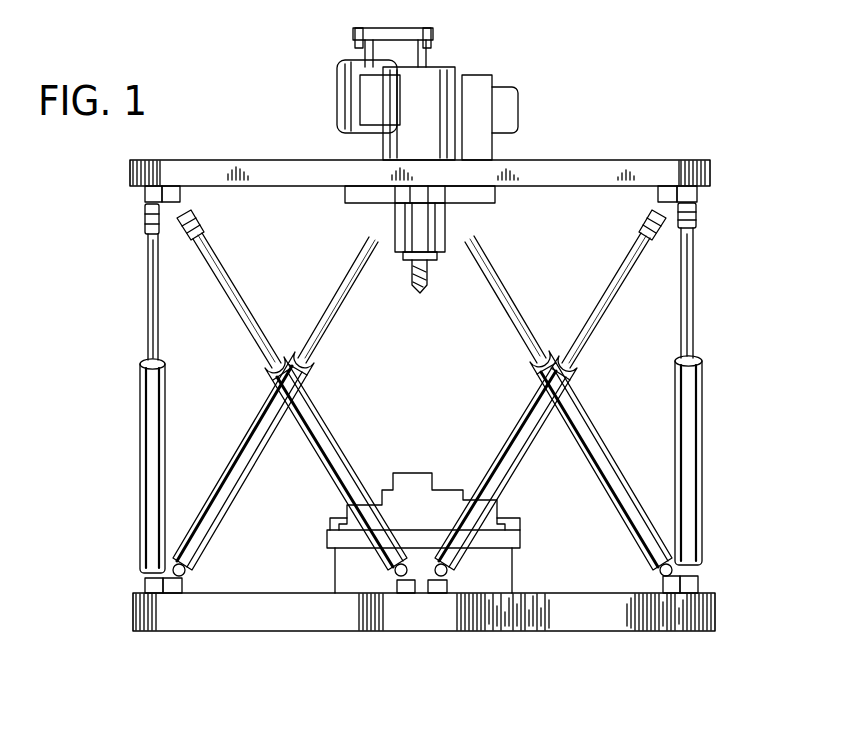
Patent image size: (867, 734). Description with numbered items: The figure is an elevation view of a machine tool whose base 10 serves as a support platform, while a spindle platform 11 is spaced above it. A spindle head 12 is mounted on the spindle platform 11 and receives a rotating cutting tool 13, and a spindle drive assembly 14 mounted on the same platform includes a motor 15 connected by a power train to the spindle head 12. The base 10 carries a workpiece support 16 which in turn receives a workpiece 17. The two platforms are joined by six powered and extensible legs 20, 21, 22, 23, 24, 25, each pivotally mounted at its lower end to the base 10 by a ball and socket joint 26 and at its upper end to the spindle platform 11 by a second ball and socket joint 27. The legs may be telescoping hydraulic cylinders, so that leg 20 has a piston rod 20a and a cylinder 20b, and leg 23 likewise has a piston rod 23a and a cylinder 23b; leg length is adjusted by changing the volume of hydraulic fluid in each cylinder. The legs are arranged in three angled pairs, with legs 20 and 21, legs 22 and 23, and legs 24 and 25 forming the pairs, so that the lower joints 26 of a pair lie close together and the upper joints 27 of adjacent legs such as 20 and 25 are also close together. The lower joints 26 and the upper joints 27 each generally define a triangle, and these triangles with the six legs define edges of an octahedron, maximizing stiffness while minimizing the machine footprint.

The base 10 is at (626, 616).
The spindle platform 11 is at (640, 162).
The spindle head 12 is at (417, 240).
The rotating cutting tool 13 is at (428, 283).
The spindle drive assembly 14 is at (408, 84).
The motor 15 is at (338, 95).
The workpiece support 16 is at (496, 568).
The workpiece 17 is at (421, 485).
The powered extensible leg 20 is at (98, 403).
The piston rod 20a is at (148, 296).
The cylinder 20b is at (140, 498).
The powered extensible leg 21 is at (252, 432).
The powered extensible leg 22 is at (530, 372).
The powered extensible leg 23 is at (729, 396).
The piston rod 23a is at (697, 272).
The cylinder 23b is at (702, 464).
The powered extensible leg 24 is at (530, 447).
The powered extensible leg 25 is at (317, 410).
The ball and socket joint 26 is at (145, 574).
The second ball and socket joint 27 is at (146, 211).